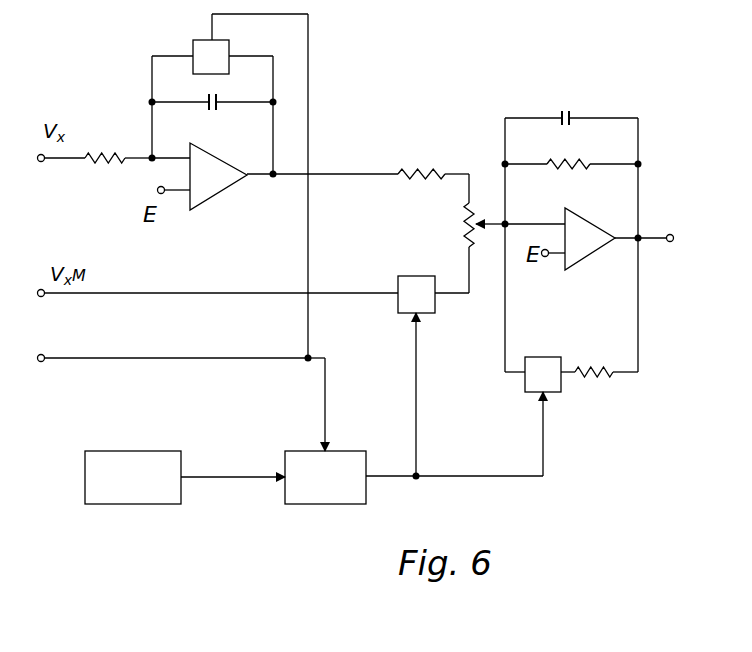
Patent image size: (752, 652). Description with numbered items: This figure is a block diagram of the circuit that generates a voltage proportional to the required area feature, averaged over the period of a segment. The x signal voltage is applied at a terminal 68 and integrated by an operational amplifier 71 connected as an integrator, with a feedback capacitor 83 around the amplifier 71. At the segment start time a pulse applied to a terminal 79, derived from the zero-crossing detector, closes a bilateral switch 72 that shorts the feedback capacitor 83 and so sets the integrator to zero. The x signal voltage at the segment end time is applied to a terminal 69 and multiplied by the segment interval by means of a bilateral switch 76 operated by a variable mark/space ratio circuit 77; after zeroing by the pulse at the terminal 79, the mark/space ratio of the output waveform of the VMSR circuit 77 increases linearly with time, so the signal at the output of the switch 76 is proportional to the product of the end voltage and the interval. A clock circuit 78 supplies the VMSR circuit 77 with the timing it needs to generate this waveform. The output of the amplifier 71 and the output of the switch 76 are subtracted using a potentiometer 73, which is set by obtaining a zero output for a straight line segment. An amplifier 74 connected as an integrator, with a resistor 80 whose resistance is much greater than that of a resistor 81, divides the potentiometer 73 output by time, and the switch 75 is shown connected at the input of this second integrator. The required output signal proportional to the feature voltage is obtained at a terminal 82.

The terminal 68 is at (43, 162).
The terminal 69 is at (43, 297).
The operational amplifier 71 is at (217, 194).
The bilateral switch 72 is at (200, 40).
The potentiometer 73 is at (476, 222).
The amplifier 74 is at (598, 250).
The switch 75 is at (545, 357).
The bilateral switch 76 is at (420, 276).
The variable mark/space ratio (VMSR) circuit 77 is at (298, 451).
The clock circuit 78 is at (150, 451).
The terminal 79 is at (43, 362).
The resistor 80 is at (573, 168).
The resistor 81 is at (606, 376).
The terminal 82 is at (671, 242).
The feedback capacitor 83 is at (219, 106).